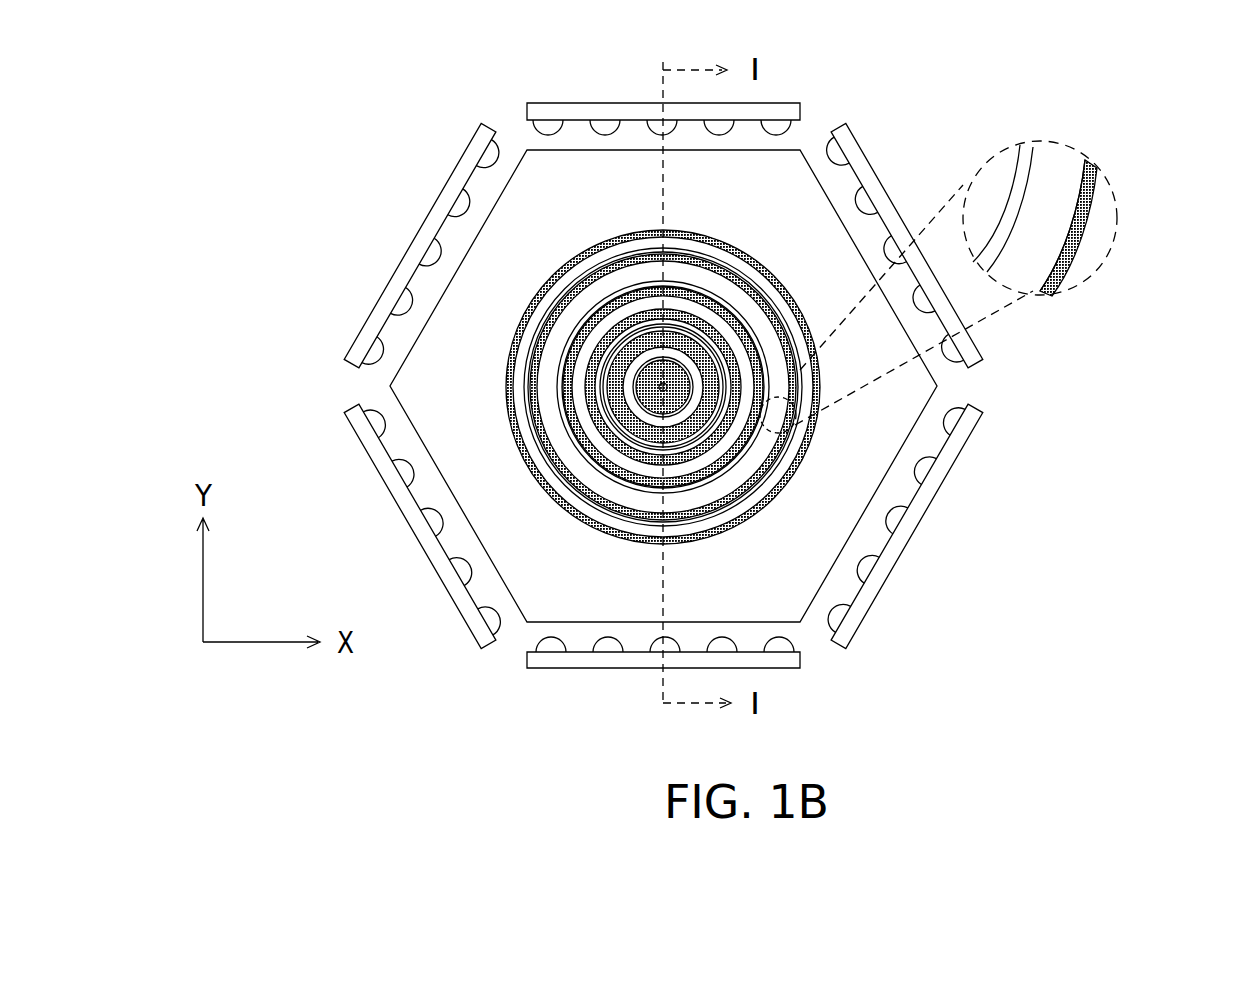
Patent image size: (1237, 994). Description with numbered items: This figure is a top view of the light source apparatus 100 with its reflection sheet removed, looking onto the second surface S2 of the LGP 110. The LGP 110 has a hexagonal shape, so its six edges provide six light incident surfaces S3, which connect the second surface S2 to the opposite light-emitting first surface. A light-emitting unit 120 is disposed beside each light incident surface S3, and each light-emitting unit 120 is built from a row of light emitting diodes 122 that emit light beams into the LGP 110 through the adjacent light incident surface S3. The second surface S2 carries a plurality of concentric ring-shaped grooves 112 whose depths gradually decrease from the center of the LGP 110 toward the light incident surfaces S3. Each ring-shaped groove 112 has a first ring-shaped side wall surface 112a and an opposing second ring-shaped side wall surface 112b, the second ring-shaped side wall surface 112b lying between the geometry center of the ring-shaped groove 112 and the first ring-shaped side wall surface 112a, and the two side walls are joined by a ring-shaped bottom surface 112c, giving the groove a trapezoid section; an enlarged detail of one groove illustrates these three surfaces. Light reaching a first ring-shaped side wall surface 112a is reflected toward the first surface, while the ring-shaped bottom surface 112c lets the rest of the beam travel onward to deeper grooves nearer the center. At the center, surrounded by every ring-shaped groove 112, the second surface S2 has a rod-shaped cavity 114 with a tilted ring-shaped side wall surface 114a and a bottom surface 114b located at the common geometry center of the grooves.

The light source apparatus 100 is at (1178, 630).
The LGP 110 is at (432, 383).
The ring-shaped groove 112 is at (755, 318).
The first ring-shaped side wall surface 112a is at (1104, 178).
The second ring-shaped side wall surface 112b is at (1028, 150).
The ring-shaped bottom surface 112c is at (1068, 160).
The cavity 114 is at (632, 407).
The ring-shaped side wall surface 114a is at (677, 398).
The bottom surface 114b is at (649, 394).
The light-emitting unit 120 is at (800, 112).
The light emitting diode 122 is at (543, 643).
The second surface S2 is at (540, 158).
The light incident surface S3 is at (934, 380).